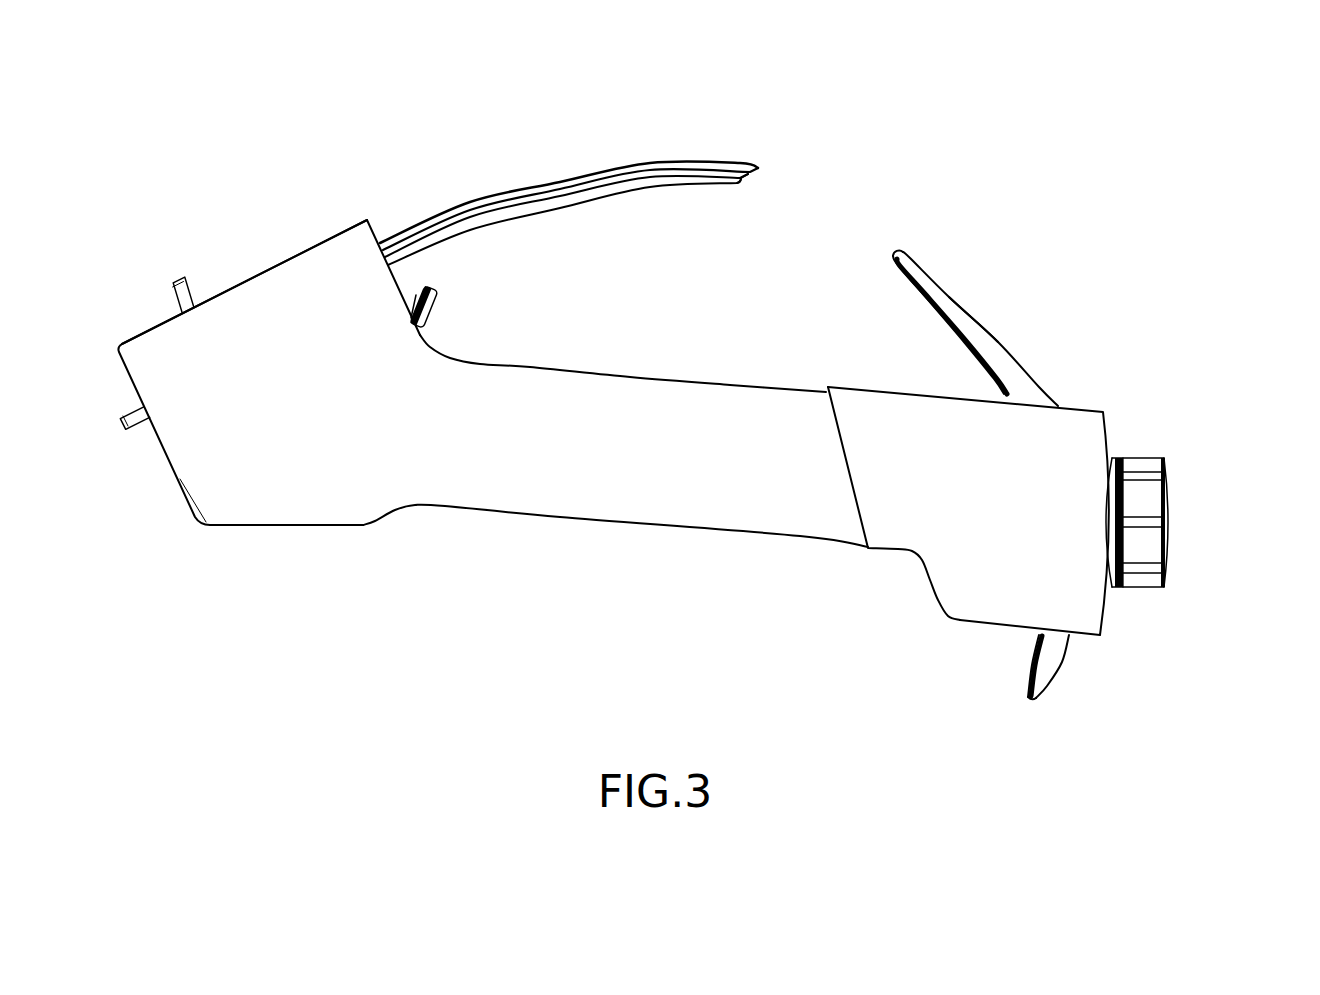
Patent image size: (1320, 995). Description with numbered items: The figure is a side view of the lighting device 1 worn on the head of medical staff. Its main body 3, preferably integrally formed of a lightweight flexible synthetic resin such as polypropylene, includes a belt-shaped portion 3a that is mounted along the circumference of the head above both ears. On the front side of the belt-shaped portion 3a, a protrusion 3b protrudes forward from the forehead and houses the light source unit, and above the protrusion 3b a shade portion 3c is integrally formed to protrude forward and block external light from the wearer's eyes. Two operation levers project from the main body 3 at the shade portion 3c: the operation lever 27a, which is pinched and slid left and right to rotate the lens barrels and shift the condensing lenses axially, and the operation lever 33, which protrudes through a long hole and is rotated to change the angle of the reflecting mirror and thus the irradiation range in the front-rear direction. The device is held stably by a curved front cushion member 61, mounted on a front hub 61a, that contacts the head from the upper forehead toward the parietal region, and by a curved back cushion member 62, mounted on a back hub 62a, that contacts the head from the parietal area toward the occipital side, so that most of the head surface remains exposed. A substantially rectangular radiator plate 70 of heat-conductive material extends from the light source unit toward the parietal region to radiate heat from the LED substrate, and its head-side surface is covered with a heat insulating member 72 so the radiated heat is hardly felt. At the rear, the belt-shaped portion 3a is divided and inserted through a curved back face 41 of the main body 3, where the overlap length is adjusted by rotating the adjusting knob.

The lighting device 1 is at (1087, 241).
The main body 3 is at (493, 403).
The belt-shaped portion 3a is at (680, 495).
The protrusion 3b is at (262, 498).
The shade portion 3c is at (252, 275).
The lens barrel rotation operation member (operation lever) 27a is at (118, 426).
The rotation operating member (operation lever) 33 is at (176, 278).
The back face 41 is at (989, 576).
The front cushion member 61 is at (440, 313).
The front hub 61a is at (411, 303).
The back cushion member 62 is at (913, 297).
The back hub 62a is at (985, 320).
The radiator plate 70 is at (668, 162).
The heat insulating member 72 is at (702, 187).